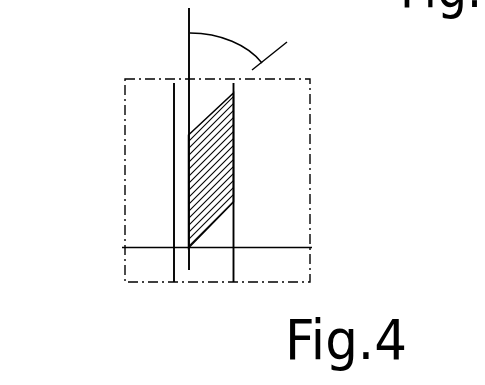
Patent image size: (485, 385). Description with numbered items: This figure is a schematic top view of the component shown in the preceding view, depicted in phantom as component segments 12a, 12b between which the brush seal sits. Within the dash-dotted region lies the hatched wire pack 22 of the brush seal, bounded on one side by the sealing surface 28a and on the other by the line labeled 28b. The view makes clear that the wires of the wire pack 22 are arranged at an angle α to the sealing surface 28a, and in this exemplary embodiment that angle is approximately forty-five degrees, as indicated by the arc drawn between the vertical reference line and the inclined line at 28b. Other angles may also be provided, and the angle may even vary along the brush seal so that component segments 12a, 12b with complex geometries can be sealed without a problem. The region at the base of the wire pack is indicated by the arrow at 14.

The component segment 12a is at (133, 153).
The component segment 12b is at (293, 113).
The wire pack 22 is at (200, 143).
The sealing surface 28a is at (189, 268).
The second side surface inclined at angle α 28b is at (238, 141).
The bottom surface / base 14 is at (220, 272).